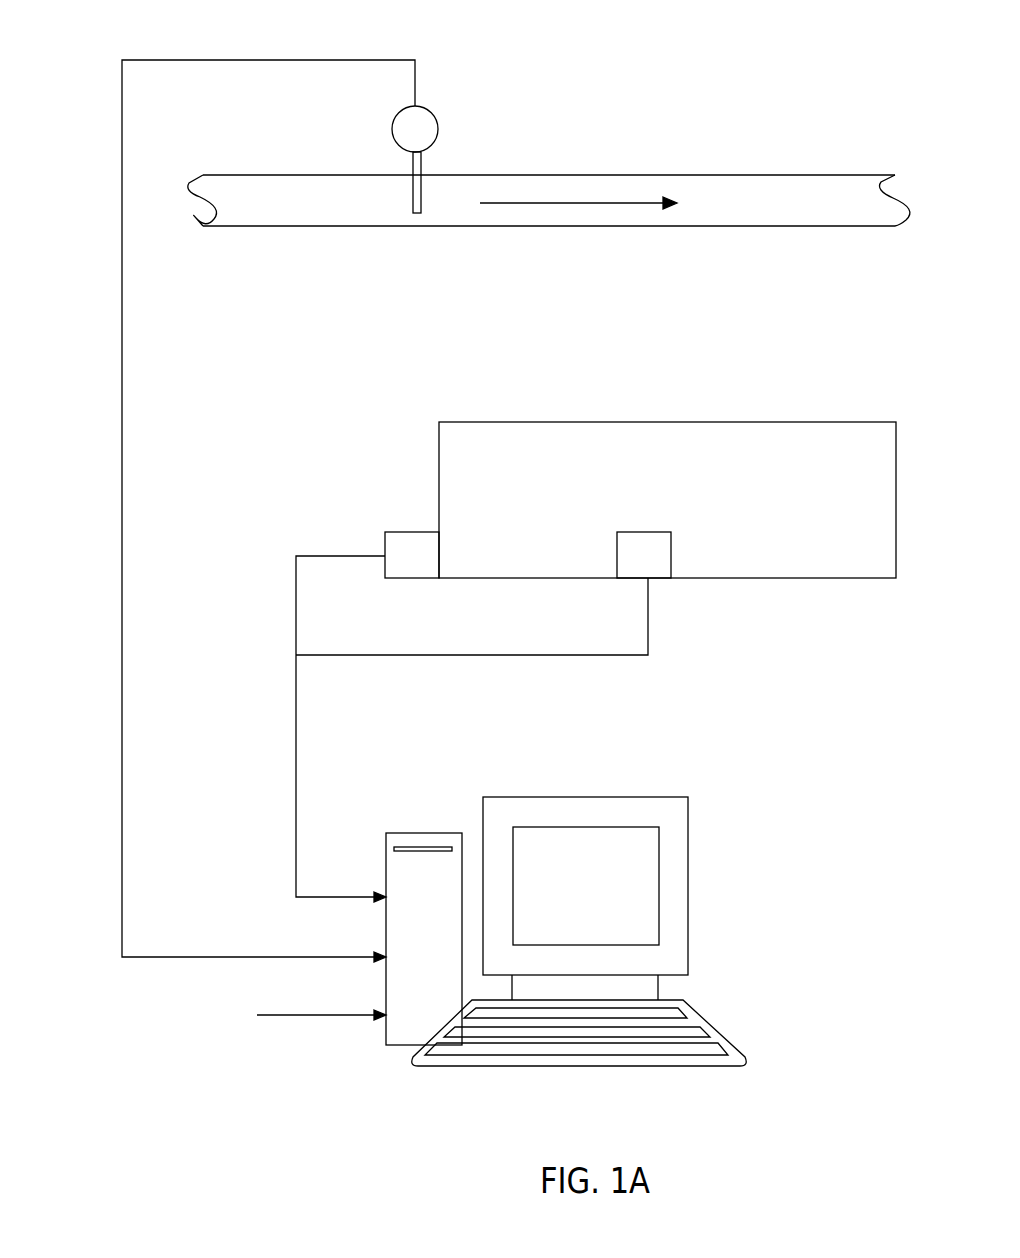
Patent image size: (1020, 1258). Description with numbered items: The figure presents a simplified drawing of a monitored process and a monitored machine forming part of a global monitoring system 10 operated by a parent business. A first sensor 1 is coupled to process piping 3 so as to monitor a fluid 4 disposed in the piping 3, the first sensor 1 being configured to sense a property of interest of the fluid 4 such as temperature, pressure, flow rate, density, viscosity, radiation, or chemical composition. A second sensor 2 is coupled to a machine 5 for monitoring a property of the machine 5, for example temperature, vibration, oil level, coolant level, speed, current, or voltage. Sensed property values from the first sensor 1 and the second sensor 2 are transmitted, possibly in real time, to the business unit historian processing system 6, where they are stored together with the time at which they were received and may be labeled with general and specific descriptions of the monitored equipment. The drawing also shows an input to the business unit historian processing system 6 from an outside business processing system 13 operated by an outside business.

The first sensor 1 is at (438, 120).
The second sensor 2 is at (422, 542).
The process piping 3 is at (563, 173).
The fluid 4 is at (562, 203).
The machine 5 is at (735, 470).
The business unit historian processing system (BUHPS) 6 is at (428, 833).
The global monitoring system 10 is at (856, 80).
The outside business processing system 13 is at (214, 1012).